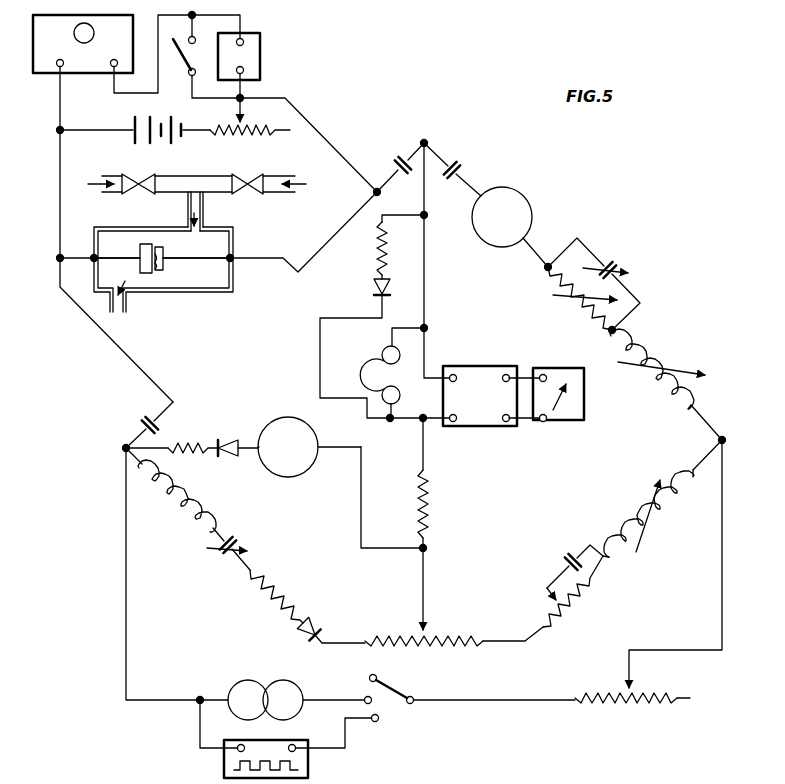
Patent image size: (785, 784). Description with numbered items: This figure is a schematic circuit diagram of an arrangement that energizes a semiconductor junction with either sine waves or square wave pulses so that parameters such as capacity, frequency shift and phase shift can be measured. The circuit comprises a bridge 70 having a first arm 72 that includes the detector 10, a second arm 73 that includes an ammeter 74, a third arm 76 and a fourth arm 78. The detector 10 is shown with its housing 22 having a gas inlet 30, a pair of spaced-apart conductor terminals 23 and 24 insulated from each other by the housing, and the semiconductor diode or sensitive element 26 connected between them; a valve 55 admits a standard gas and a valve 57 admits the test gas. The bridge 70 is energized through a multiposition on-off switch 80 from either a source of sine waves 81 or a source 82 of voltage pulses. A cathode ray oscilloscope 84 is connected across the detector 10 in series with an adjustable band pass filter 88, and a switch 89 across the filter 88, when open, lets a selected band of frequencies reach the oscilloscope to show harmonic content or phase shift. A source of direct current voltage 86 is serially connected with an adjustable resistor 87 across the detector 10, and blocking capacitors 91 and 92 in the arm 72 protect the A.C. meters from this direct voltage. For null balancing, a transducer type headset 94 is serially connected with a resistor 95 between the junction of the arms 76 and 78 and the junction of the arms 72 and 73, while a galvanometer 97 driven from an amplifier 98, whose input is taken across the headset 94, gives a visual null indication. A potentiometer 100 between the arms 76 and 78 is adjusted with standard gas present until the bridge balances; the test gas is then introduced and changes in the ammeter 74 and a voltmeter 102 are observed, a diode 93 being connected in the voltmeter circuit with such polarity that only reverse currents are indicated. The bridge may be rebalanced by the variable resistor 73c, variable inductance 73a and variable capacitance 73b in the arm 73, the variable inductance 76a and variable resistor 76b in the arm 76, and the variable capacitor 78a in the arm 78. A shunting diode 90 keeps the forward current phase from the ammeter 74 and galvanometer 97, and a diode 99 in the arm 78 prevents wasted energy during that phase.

The detector 10 is at (193, 291).
The housing 22 is at (236, 244).
The conductor terminal 23 is at (221, 257).
The conductor terminal 24 is at (132, 257).
The semiconductor diode or sensitive element 26 is at (162, 268).
The gas inlet 30 is at (187, 208).
The valve and conduit arrangement 55 is at (160, 175).
The valve 57 is at (268, 171).
The bridge 70 is at (498, 304).
The first arm 72 is at (405, 146).
The second arm 73 is at (540, 238).
The variable inductance 73a is at (664, 359).
The variable capacitance 73b is at (612, 258).
The variable resistor 73c is at (585, 312).
The ammeter 74 is at (534, 185).
The third arm 76 is at (606, 530).
The variable inductance 76a is at (639, 502).
The variable resistor 76b is at (575, 605).
The fourth arm 78 is at (268, 584).
The variable capacitor 78a is at (237, 533).
The multiposition on-off switch 80 is at (390, 690).
The source of sine waves 81 is at (268, 680).
The source of voltage pulses 82 is at (224, 762).
The cathode ray oscilloscope 84 is at (47, 74).
The source of direct current voltage 86 is at (131, 118).
The adjustable resistor 87 is at (244, 124).
The adjustable band pass filter 88 is at (261, 61).
The switch 89 is at (176, 47).
The shunting diode 90 is at (375, 288).
The blocking capacitor 91 is at (148, 414).
The blocking capacitor 92 is at (408, 177).
The rectifier 93 is at (224, 438).
The transducer type headset 94 is at (376, 371).
The resistor 95 is at (428, 511).
The galvanometer 97 is at (579, 427).
The amplifier 98 is at (498, 366).
The diode 99 is at (313, 626).
The potentiometer 100 is at (440, 637).
The voltmeter 102 is at (318, 442).